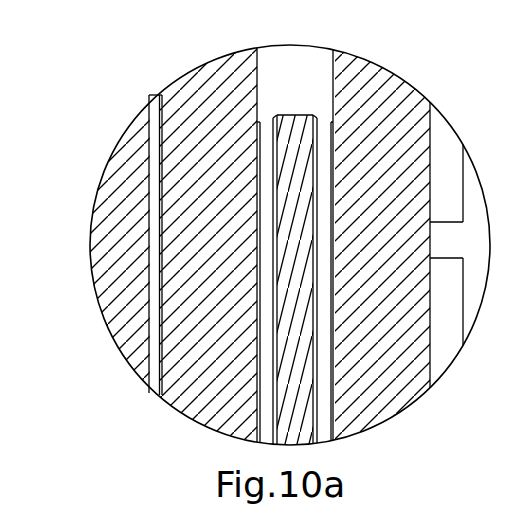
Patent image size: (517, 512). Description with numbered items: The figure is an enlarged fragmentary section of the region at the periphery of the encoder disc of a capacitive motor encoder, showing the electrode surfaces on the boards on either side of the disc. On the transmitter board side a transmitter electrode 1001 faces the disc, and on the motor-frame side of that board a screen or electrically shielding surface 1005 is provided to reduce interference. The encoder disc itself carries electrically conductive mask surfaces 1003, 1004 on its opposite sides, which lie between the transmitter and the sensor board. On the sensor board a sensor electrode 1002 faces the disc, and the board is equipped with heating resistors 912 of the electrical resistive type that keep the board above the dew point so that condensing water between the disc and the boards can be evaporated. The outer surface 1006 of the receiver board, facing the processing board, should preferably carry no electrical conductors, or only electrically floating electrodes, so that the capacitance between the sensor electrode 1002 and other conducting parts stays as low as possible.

The heating resistor 912 is at (452, 117).
The transmitter electrode 1001 is at (255, 225).
The sensor electrode 1002 is at (327, 378).
The electrically conductive mask surface 1003 is at (273, 262).
The electrically conductive mask surface 1004 is at (313, 313).
The electrically shielding surface 1005 is at (155, 178).
The surface of the receiver board 1006 is at (430, 103).